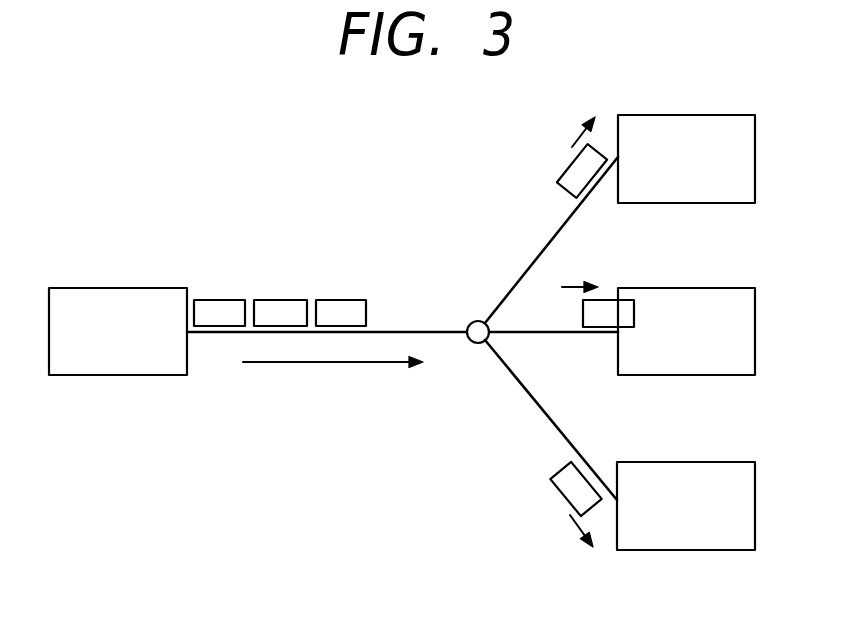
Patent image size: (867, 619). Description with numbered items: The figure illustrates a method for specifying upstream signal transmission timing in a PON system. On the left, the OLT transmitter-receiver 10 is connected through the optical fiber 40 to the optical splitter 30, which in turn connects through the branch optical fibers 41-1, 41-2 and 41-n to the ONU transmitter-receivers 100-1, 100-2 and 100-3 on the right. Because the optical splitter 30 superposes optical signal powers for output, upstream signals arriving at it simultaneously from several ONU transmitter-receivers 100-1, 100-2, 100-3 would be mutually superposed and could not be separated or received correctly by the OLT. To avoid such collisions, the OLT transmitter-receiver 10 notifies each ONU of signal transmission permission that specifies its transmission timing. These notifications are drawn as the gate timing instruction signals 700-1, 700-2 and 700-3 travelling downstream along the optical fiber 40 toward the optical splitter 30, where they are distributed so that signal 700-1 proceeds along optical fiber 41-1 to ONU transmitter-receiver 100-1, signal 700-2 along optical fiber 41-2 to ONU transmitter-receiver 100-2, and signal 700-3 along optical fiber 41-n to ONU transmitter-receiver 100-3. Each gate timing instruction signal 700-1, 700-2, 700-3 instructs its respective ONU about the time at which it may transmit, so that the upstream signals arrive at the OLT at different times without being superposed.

The OLT transmitter-receiver 10 is at (117, 288).
The optical fiber 40 is at (413, 330).
The optical splitter 30 is at (477, 321).
The optical fiber 41-1 is at (540, 250).
The optical fiber 41-2 is at (567, 337).
The optical fiber 41-n is at (517, 383).
The gate timing instruction signal 700-1 is at (341, 300).
The gate timing instruction signal 700-2 is at (281, 300).
The gate timing instruction signal 700-3 is at (219, 300).
The ONU transmitter-receiver 100-1 is at (685, 113).
The ONU transmitter-receiver 100-2 is at (688, 287).
The ONU transmitter-receiver 100-3 is at (682, 460).